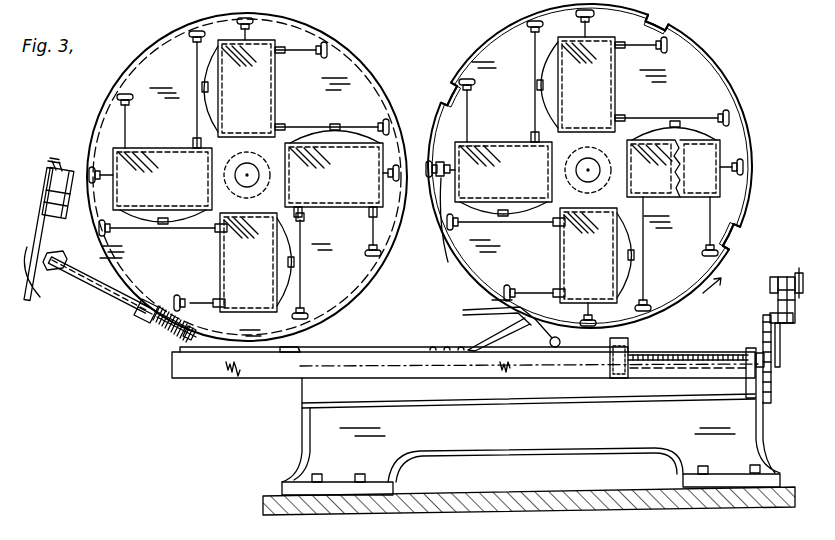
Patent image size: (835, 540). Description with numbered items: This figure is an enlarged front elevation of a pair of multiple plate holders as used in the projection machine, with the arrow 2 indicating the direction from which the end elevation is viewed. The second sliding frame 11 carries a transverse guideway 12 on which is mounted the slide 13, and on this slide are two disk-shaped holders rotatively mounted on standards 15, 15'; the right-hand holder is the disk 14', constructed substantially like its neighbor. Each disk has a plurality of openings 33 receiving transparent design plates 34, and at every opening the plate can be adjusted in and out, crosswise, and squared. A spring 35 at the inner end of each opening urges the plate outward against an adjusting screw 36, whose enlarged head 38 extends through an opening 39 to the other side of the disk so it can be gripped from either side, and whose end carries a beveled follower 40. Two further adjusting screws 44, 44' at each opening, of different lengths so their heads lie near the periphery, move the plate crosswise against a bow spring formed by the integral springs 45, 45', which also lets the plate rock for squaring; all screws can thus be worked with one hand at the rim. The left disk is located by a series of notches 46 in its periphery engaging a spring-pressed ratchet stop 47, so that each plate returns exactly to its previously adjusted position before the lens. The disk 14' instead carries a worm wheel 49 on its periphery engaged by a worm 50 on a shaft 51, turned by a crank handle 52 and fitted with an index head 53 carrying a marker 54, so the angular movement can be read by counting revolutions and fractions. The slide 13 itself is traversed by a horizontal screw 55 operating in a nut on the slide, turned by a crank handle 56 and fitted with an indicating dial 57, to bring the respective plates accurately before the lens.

The arrow 2 is at (756, 102).
The second sliding frame 11 is at (480, 512).
The transverse guideway 12 is at (650, 396).
The slide 13 is at (236, 380).
The multiple plate holder 14' is at (427, 172).
The standard 15 is at (635, 352).
The standard 15' is at (318, 336).
The opening 33 is at (718, 158).
The transparent design plate 34 is at (262, 78).
The spring 35 is at (258, 164).
The adjusting screw 36 is at (255, 28).
The enlarged head 38 is at (438, 178).
The opening 39 is at (442, 166).
The beveled follower 40 is at (444, 190).
The adjusting screw 44 is at (308, 195).
The adjusting screw 44' is at (332, 137).
The spring 45 is at (314, 266).
The spring 45' is at (336, 231).
The notch 46 is at (657, 30).
The spring-pressed ratchet stop 47 is at (500, 318).
The worm wheel 49 is at (143, 318).
The worm 50 is at (172, 332).
The shaft 51 is at (101, 290).
The crank handle 52 is at (70, 168).
The index head 53 is at (37, 290).
The marker 54 is at (40, 216).
The horizontal screw 55 is at (678, 357).
The crank handle 56 is at (788, 276).
The indicating dial 57 is at (772, 380).